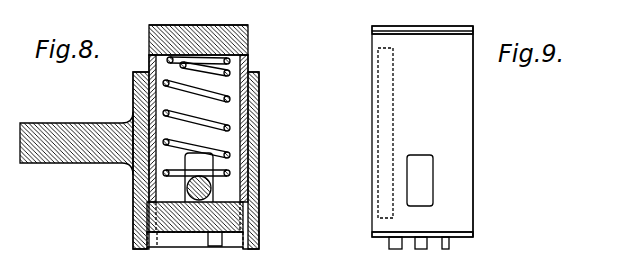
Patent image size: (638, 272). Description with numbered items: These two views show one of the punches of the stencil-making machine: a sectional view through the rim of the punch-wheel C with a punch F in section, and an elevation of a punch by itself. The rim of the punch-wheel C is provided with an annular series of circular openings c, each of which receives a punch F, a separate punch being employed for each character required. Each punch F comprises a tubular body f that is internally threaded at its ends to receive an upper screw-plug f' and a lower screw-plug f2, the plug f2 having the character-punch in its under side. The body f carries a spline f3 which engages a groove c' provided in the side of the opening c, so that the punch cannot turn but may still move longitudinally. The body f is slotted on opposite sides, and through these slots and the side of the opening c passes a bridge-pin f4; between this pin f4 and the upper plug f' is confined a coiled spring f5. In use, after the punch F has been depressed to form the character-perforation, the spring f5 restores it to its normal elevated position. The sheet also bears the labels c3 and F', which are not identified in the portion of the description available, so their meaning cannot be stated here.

In FIG. 8, the groove c' is at (80, 128).
In FIG. 8, the circular opening c is at (206, 160).
In FIG. 8, the punch-wheel C is at (268, 147).
In FIG. 8, the tubular body f is at (206, 152).
In FIG. 9, the tubular body f is at (430, 131).
In FIG. 8, the punch F is at (206, 113).
In FIG. 8, the upper screw-plug f' is at (198, 13).
In FIG. 9, the upper screw-plug f' is at (430, 21).
In FIG. 8, the lower screw-plug f2 is at (235, 211).
In FIG. 9, the lower screw-plug f2 is at (474, 236).
In FIG. 8, the slot / feet c3 is at (195, 252).
In FIG. 9, the slot / feet c3 is at (419, 254).
In FIG. 9, the spline f3 is at (378, 158).
In FIG. 8, the bridge-pin f4 is at (209, 189).
In FIG. 8, the coiled spring f5 is at (182, 150).
In FIG. 9, the cap side F' is at (487, 131).